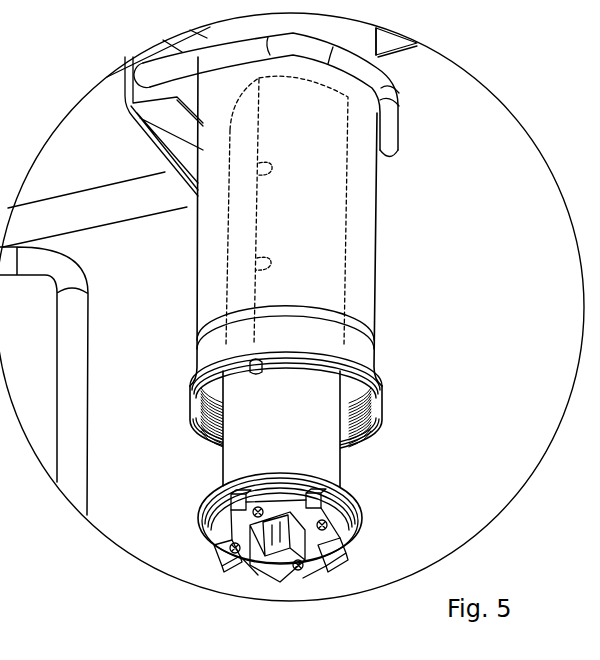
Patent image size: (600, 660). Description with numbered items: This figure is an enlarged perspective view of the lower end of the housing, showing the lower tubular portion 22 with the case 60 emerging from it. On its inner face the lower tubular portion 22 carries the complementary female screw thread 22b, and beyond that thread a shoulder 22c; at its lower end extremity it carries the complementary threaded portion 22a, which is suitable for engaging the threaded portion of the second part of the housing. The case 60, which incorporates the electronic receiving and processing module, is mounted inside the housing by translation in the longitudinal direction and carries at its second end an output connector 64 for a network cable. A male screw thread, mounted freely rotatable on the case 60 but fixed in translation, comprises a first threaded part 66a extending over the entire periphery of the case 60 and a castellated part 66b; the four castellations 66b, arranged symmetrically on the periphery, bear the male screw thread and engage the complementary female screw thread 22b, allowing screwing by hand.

The lower tubular portion 22 is at (376, 234).
The complementary threaded portion 22a is at (352, 433).
The complementary female screw thread 22b is at (365, 411).
The shoulder 22c is at (374, 372).
The case 60 is at (330, 461).
The connector 64 is at (262, 580).
The first threaded part 66a is at (341, 491).
The castellated part 66b is at (342, 509).